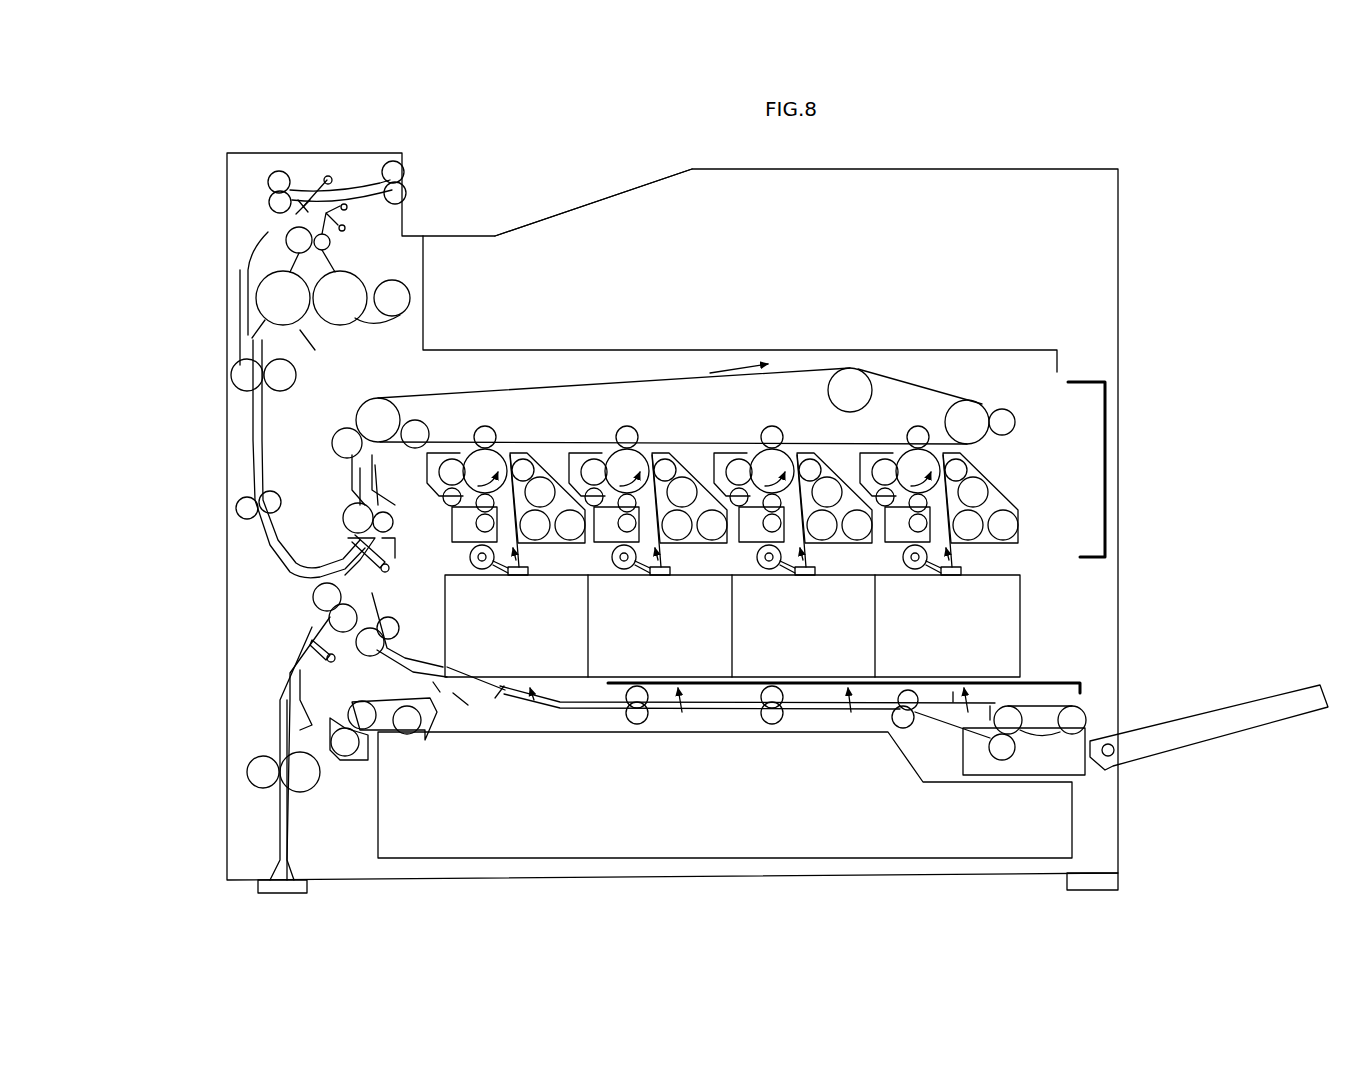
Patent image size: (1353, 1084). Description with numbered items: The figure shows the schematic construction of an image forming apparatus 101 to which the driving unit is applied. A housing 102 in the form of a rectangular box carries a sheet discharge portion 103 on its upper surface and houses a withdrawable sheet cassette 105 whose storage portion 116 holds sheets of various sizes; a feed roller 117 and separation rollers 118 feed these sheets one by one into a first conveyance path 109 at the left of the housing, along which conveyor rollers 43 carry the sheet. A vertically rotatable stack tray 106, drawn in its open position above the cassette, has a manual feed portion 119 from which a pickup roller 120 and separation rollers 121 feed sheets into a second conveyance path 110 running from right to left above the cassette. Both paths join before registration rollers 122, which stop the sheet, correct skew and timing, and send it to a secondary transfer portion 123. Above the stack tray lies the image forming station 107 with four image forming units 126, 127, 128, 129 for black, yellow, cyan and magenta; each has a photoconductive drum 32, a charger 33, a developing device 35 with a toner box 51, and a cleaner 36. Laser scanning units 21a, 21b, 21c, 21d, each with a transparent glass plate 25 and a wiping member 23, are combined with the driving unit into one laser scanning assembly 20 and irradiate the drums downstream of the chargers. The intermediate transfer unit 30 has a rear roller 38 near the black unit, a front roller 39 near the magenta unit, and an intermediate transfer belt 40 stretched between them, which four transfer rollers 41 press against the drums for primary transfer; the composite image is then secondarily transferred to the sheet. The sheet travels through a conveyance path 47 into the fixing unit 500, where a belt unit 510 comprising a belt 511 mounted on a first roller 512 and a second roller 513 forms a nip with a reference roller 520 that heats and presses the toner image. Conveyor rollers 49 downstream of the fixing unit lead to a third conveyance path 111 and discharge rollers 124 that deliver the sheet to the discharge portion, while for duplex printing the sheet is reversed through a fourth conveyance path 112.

The image forming apparatus 101 is at (1072, 143).
The housing 102 is at (262, 226).
The sheet discharge portion 103 is at (622, 190).
The sheet cassette 105 is at (1078, 824).
The stack tray 106 is at (1305, 675).
The image forming station 107 is at (1060, 473).
The first conveyance path 109 is at (283, 668).
The second conveyance path 110 is at (812, 710).
The third conveyance path 111 is at (316, 170).
The fourth conveyance path 112 is at (260, 548).
The storage portion 116 is at (530, 816).
The feed roller 117 is at (410, 728).
The separation rollers 118 is at (345, 758).
The manual feed portion 119 is at (1222, 712).
The pickup roller 120 is at (1088, 720).
The separation rollers 121 is at (995, 755).
The registration rollers 122 is at (345, 518).
The secondary transfer portion 123 is at (322, 452).
The discharge rollers 124 is at (402, 166).
The image forming unit 126 is at (513, 437).
The image forming unit 127 is at (648, 443).
The image forming unit 128 is at (797, 435).
The image forming unit 129 is at (1010, 480).
The laser scanning assembly 20 is at (1022, 590).
The laser scanning unit 21a is at (535, 705).
The laser scanning unit 21b is at (684, 705).
The laser scanning unit 21c is at (855, 705).
The laser scanning unit 21d is at (965, 705).
The wiping member 23 is at (503, 573).
The transparent glass plate 25 is at (518, 578).
The intermediate transfer unit 30 is at (905, 366).
The photoconductive drum 32 is at (452, 458).
The charger 33 is at (482, 570).
The developing device 35 is at (522, 452).
The cleaner 36 is at (594, 458).
The rear roller 38 is at (392, 410).
The front roller 39 is at (968, 408).
The intermediate transfer belt 40 is at (862, 368).
The transfer roller 41 is at (484, 426).
The conveyor rollers 43 is at (312, 598).
The conveyance path 47 is at (330, 262).
The conveyor rollers 49 is at (352, 270).
The toner box 51 is at (560, 545).
The fixing unit 500 is at (262, 276).
The belt unit 510 is at (398, 273).
The belt 511 is at (372, 328).
The first roller 512 is at (333, 242).
The second roller 513 is at (405, 298).
The reference roller 520 is at (262, 306).